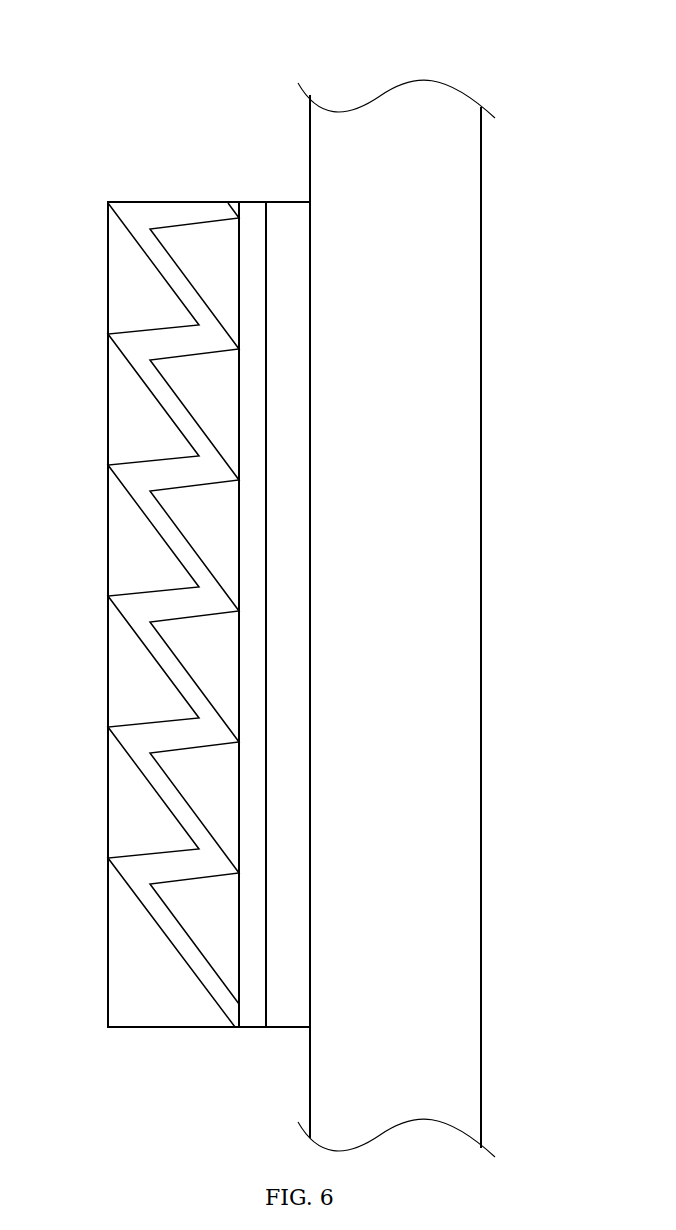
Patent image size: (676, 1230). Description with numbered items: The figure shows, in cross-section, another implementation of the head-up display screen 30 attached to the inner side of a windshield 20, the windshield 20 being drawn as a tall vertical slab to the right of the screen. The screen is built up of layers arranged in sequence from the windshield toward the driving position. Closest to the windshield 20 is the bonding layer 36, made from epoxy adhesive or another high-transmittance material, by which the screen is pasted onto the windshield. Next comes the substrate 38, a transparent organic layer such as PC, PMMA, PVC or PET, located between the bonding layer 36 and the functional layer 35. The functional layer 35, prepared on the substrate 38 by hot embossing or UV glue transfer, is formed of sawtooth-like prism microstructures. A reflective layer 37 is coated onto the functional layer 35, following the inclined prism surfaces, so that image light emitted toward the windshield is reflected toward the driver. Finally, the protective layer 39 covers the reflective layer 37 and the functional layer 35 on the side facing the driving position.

The windshield 20 is at (438, 260).
The head-up display screen 30 is at (86, 40).
The functional layer 35 is at (175, 238).
The bonding layer 36 is at (296, 205).
The reflective layer 37 is at (155, 863).
The substrate 38 is at (257, 217).
The protective layer 39 is at (122, 1000).